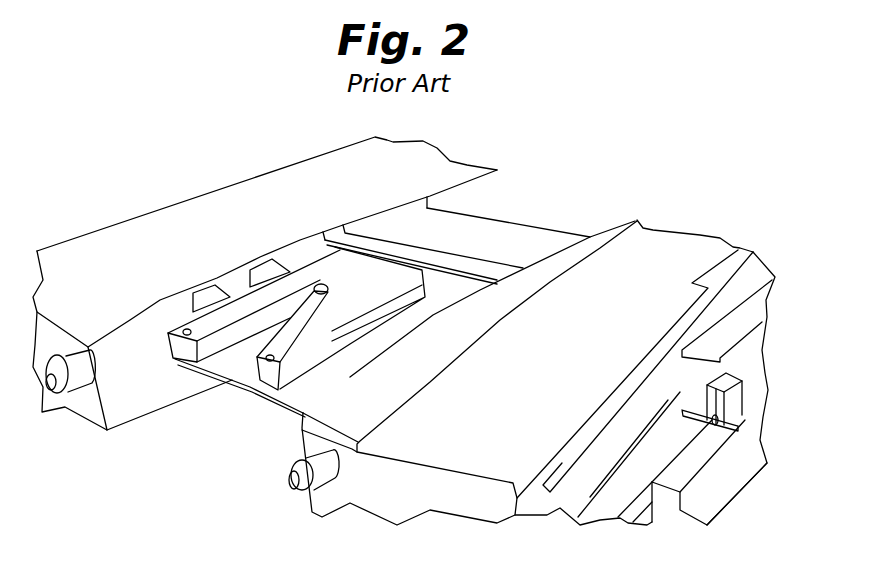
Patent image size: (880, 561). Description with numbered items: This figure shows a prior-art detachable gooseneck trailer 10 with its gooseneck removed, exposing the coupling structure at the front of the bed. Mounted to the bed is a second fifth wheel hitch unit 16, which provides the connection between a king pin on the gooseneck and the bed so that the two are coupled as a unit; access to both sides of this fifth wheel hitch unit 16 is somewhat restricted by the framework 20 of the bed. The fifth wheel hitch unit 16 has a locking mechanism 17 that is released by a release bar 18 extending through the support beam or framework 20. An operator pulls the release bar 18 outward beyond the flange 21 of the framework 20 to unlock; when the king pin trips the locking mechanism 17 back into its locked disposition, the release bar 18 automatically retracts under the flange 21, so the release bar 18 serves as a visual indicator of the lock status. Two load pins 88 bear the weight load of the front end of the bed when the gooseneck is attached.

The detachable gooseneck trailer 10 is at (233, 338).
The fifth wheel hitch unit 16 is at (288, 278).
The locking mechanism 17 is at (322, 285).
The release bar 18 is at (745, 452).
The framework 20 is at (693, 400).
The flange 21 is at (722, 332).
The load pins 88 is at (80, 378).